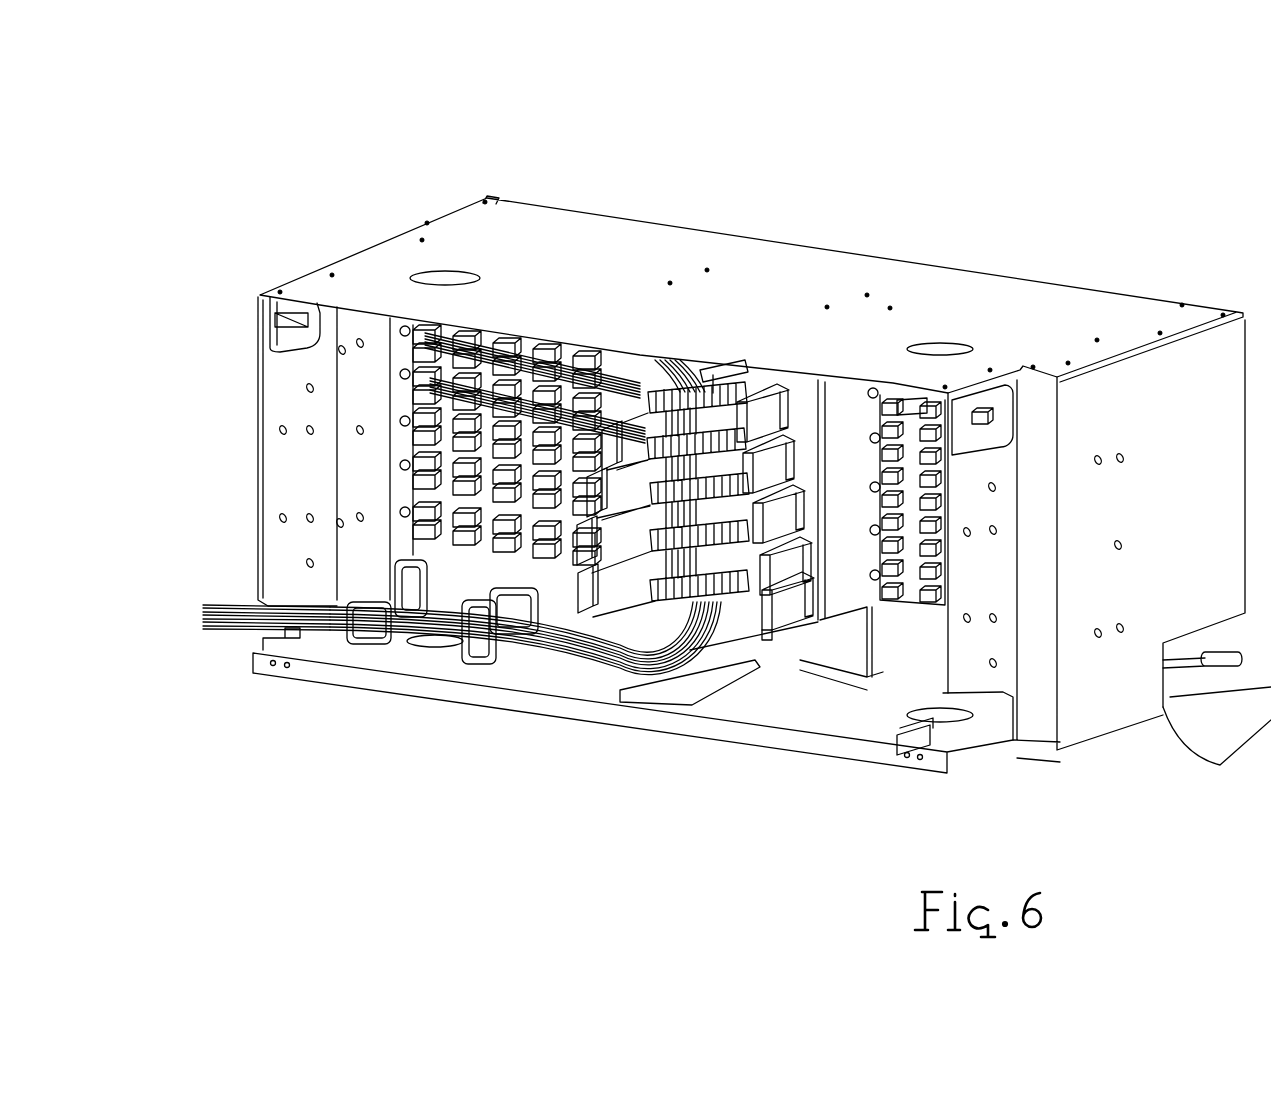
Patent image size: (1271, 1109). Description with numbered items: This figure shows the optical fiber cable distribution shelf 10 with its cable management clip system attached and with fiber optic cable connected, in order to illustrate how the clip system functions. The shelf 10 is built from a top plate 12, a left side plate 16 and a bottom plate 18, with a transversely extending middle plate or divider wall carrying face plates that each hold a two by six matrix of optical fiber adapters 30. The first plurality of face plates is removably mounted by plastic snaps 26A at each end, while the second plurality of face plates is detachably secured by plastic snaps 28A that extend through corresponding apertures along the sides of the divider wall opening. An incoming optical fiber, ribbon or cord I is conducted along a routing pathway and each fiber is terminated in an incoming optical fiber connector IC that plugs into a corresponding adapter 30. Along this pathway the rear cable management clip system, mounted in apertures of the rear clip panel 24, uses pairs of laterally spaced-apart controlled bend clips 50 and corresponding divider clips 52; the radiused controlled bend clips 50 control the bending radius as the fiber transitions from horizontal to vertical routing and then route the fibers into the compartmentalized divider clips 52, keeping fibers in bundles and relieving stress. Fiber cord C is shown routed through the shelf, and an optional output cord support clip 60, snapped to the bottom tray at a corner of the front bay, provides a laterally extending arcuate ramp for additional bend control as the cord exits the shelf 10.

The optical fiber cable distribution shelf 10 is at (1021, 204).
The incoming optical fiber connector IC is at (413, 413).
The divider clip 52 is at (713, 393).
The controlled bend clip 50 is at (787, 407).
The rear clip panel 24 is at (827, 397).
The plastic snaps 28A is at (887, 383).
The top plate 12 is at (762, 310).
The left side plate 16 is at (1178, 486).
The bottom plate 18 is at (793, 713).
The plastic snaps 26A is at (407, 422).
The optical fiber adapter 30 is at (405, 512).
The incoming optical fiber I is at (237, 630).
The cable C is at (550, 637).
The output cord support clip 60 is at (1217, 730).